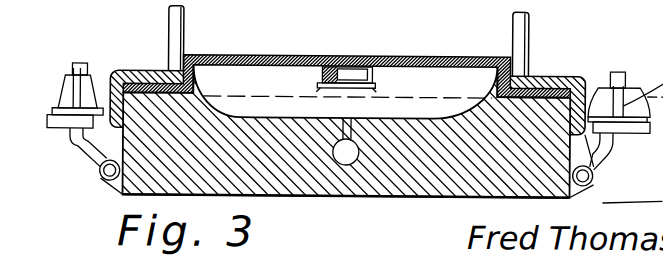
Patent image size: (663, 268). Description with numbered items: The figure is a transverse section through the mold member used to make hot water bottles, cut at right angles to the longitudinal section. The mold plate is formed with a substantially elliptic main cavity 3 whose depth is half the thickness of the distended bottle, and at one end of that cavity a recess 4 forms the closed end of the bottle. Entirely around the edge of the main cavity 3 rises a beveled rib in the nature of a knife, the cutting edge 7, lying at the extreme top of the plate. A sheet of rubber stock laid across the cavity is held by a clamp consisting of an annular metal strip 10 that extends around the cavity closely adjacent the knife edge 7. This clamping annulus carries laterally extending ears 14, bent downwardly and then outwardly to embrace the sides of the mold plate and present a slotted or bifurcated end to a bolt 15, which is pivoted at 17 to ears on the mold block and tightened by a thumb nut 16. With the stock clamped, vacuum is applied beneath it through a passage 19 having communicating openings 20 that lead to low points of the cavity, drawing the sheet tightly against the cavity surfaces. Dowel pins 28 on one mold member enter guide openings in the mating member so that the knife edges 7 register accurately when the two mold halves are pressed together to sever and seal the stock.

The main cavity 3 is at (432, 116).
The recess 4 is at (353, 66).
The raised beveled rib 7 is at (215, 58).
The annular metal strip 10 is at (547, 75).
The laterally extending ears 14 is at (56, 121).
The bolt 15 is at (80, 144).
The thumb nut 16 is at (63, 102).
The pivot 17 is at (100, 177).
The passage 19 is at (346, 152).
The communicating openings 20 is at (357, 117).
The dowel pins 28 is at (183, 23).